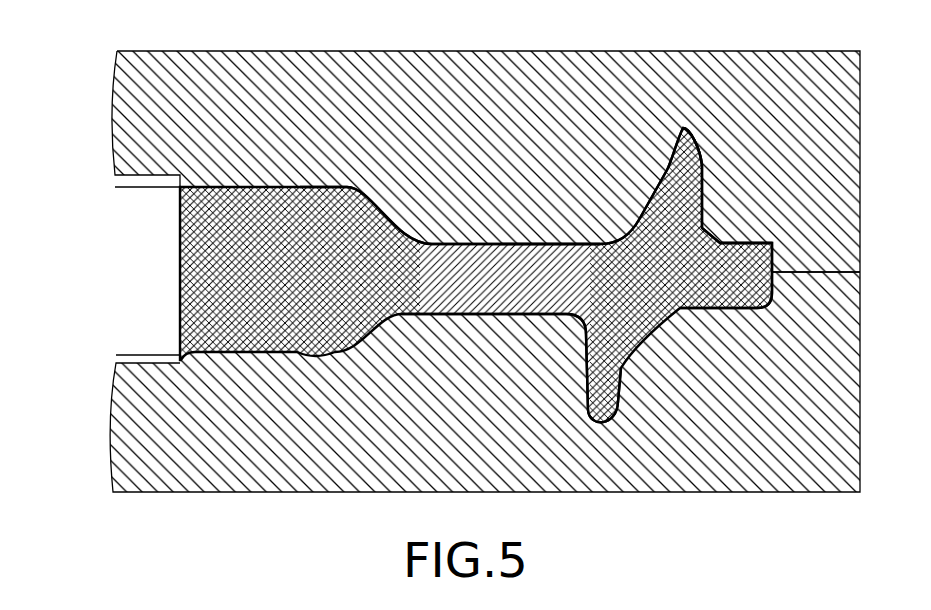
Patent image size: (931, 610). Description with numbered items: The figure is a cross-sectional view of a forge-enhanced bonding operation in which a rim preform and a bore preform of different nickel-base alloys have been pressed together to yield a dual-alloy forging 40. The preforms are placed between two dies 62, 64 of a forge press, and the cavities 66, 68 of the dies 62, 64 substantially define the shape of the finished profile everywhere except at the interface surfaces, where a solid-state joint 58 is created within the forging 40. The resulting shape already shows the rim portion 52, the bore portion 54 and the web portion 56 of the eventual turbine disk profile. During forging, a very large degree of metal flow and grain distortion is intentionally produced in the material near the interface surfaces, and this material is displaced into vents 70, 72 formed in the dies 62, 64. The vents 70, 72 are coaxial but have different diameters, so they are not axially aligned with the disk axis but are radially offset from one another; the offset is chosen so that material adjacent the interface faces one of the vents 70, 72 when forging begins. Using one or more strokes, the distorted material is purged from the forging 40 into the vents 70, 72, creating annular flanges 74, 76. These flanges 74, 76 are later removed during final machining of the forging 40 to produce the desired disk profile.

The forging 40 is at (247, 357).
The rim portion 52 is at (752, 312).
The bore portion 54 is at (308, 197).
The web portion 56 is at (467, 250).
The solid-state joint 58 is at (641, 268).
The die 62 is at (133, 93).
The die 64 is at (140, 410).
The cavity 66 is at (556, 254).
The cavity 68 is at (473, 313).
The vent 70 is at (680, 125).
The vent 72 is at (586, 378).
The annular flange 74 is at (695, 168).
The annular flange 76 is at (618, 406).